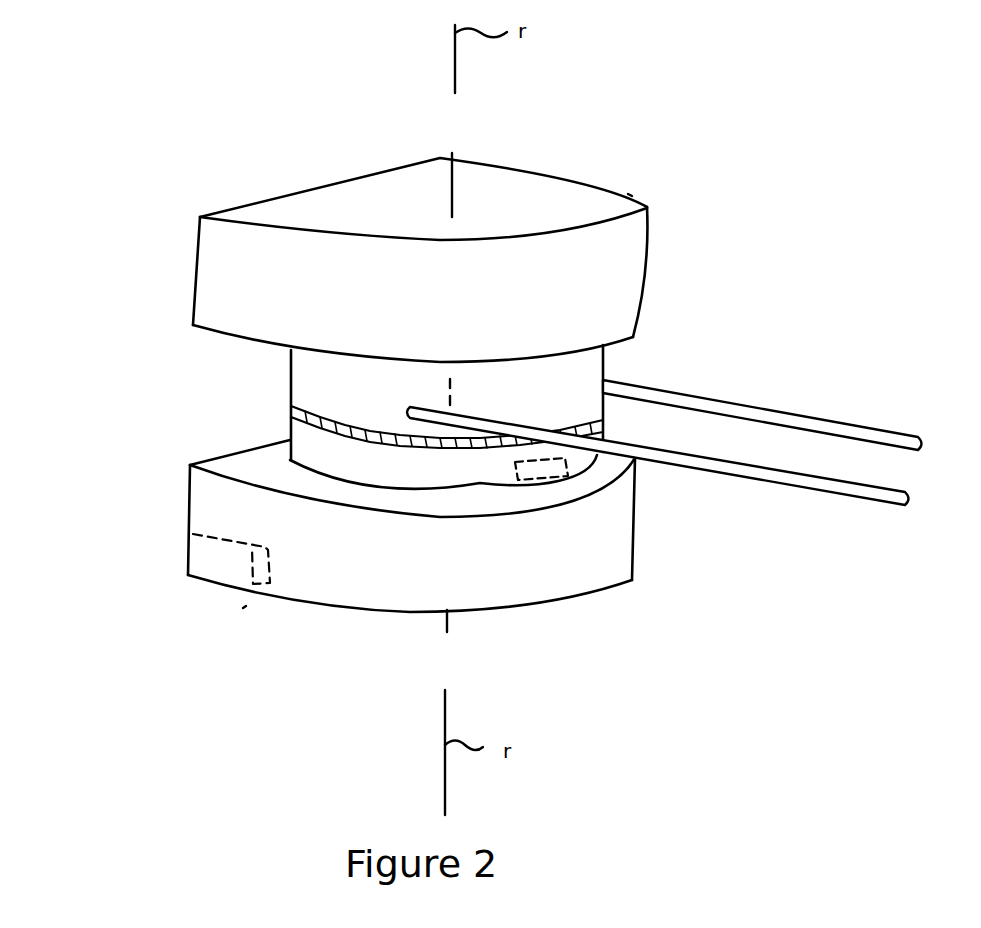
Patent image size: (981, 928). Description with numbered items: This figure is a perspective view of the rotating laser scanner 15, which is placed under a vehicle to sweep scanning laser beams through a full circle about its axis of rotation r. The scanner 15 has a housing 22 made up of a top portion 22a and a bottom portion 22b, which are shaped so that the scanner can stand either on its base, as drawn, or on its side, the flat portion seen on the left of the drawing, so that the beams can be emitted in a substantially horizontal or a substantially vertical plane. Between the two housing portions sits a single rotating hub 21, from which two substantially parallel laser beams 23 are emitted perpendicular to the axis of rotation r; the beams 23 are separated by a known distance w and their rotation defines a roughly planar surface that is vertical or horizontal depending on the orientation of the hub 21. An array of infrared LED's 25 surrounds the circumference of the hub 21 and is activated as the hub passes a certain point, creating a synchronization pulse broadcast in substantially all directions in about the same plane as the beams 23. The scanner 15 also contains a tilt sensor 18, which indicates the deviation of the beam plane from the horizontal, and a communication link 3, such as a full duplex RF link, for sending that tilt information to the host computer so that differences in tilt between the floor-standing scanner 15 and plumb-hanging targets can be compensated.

The rotating laser scanner 15 is at (628, 194).
The housing 22 is at (665, 246).
The top portion 22a is at (507, 296).
The bottom portion 22b is at (510, 571).
The rotating hub 21 is at (327, 382).
The IR LED's 25 is at (291, 410).
The parallel laser beams 23 is at (890, 362).
The communication link 3 is at (213, 560).
The tilt sensor 18 is at (513, 470).